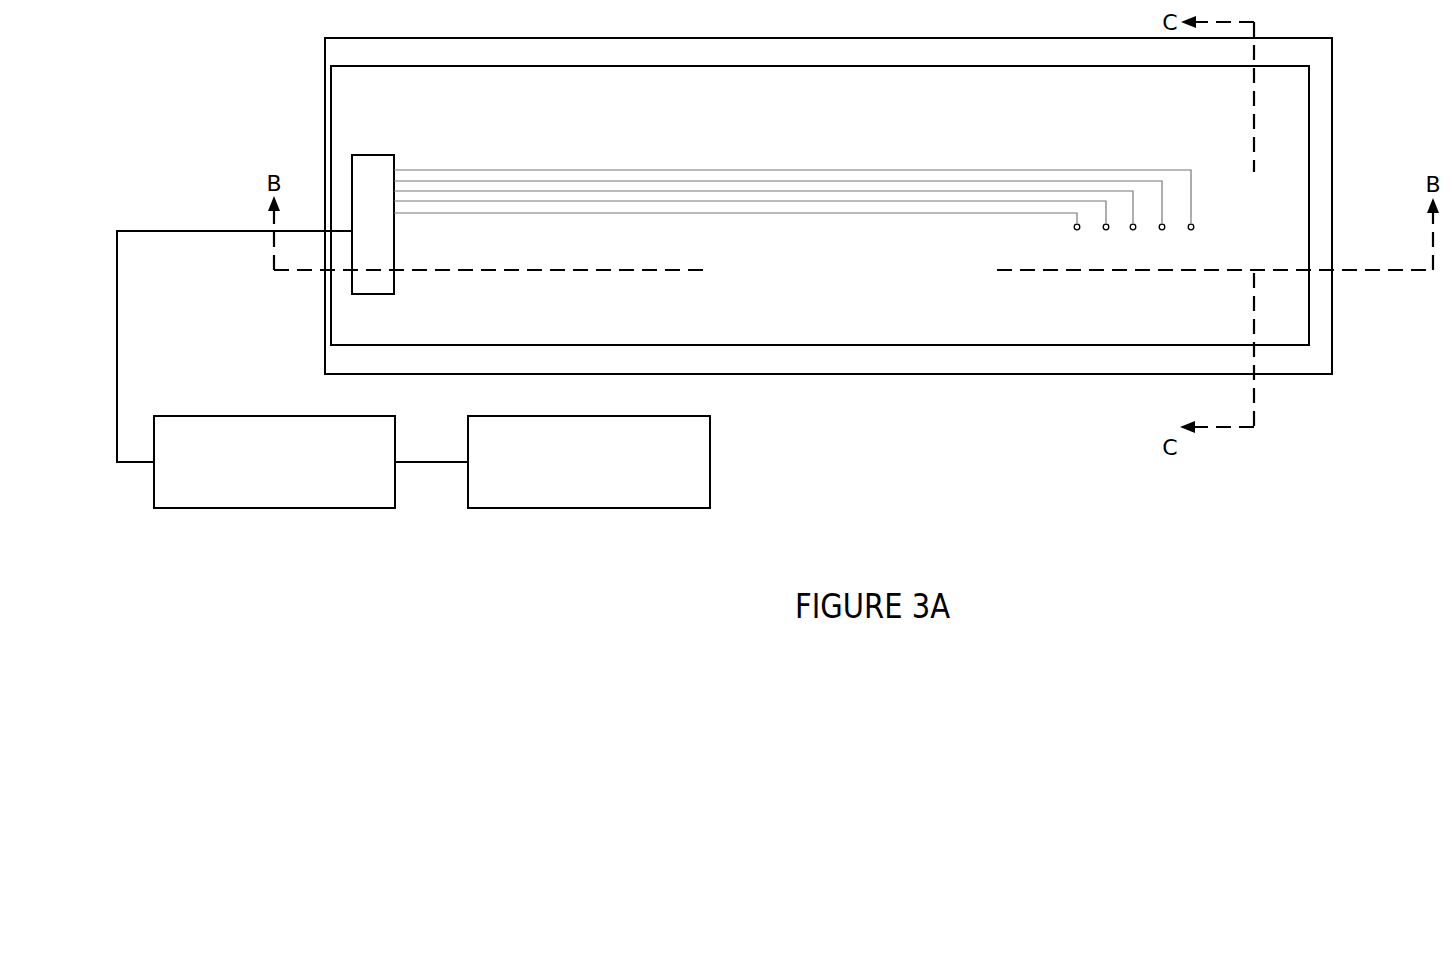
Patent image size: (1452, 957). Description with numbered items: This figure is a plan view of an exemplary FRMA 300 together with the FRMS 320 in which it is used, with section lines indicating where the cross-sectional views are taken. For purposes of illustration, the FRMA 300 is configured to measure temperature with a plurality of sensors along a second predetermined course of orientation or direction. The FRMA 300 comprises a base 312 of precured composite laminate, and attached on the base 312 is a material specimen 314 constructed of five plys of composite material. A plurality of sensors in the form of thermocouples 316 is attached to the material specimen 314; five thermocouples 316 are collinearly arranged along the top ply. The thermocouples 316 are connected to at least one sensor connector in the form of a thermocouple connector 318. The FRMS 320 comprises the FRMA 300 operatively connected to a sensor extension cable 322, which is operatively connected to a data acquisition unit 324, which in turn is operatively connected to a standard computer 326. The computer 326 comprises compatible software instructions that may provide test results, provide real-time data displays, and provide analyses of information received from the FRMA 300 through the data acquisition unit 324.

The FRMA 300 is at (250, 96).
The base 312 is at (1332, 118).
The material specimen 314 is at (1330, 243).
The thermocouples 316 is at (1121, 170).
The thermocouple connector 318 is at (357, 192).
The FRMS 320 is at (108, 498).
The sensor extension cable 322 is at (235, 231).
The data acquisition unit 324 is at (255, 508).
The computer 326 is at (588, 508).